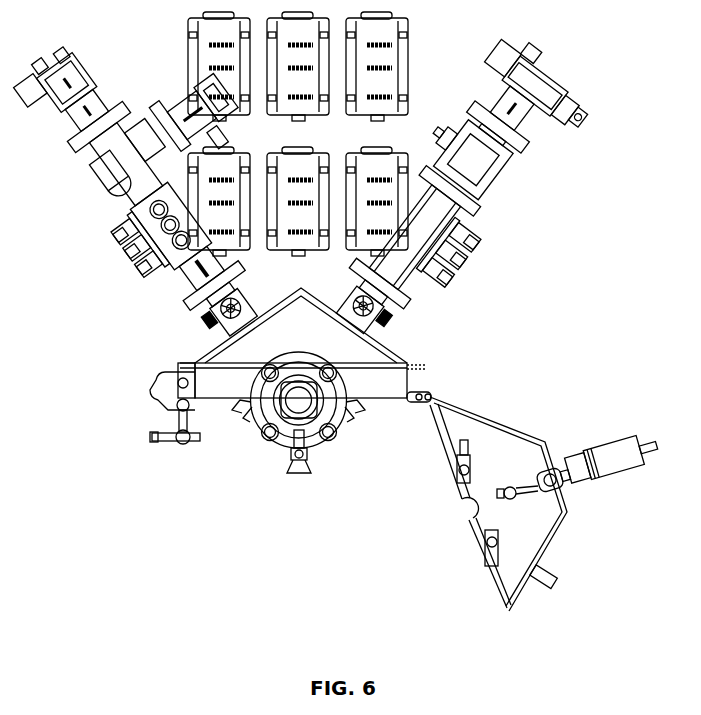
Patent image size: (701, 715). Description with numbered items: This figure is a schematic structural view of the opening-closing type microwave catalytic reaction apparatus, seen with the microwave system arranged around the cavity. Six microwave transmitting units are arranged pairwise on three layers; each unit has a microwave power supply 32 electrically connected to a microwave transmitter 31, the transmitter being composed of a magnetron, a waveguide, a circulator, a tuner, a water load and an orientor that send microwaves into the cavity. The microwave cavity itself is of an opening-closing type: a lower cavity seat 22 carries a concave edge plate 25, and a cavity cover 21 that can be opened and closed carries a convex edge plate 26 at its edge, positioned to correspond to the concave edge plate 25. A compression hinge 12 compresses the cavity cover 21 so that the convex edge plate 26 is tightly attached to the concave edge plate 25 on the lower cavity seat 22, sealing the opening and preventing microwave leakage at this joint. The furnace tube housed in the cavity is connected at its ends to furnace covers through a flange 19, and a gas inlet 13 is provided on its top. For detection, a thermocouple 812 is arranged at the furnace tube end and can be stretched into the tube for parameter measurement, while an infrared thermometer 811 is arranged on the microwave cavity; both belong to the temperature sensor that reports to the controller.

The microwave power supply 32 is at (213, 33).
The microwave transmitter 31 is at (503, 207).
The lower cavity seat 22 is at (342, 349).
The concave edge plate 25 is at (405, 402).
The convex edge plate 26 is at (431, 397).
The cavity cover 21 is at (507, 457).
The infrared thermometer 811 is at (613, 458).
The thermocouple 812 is at (298, 399).
The flange 19 is at (262, 415).
The gas inlet 13 is at (297, 470).
The compression hinge 12 is at (155, 407).